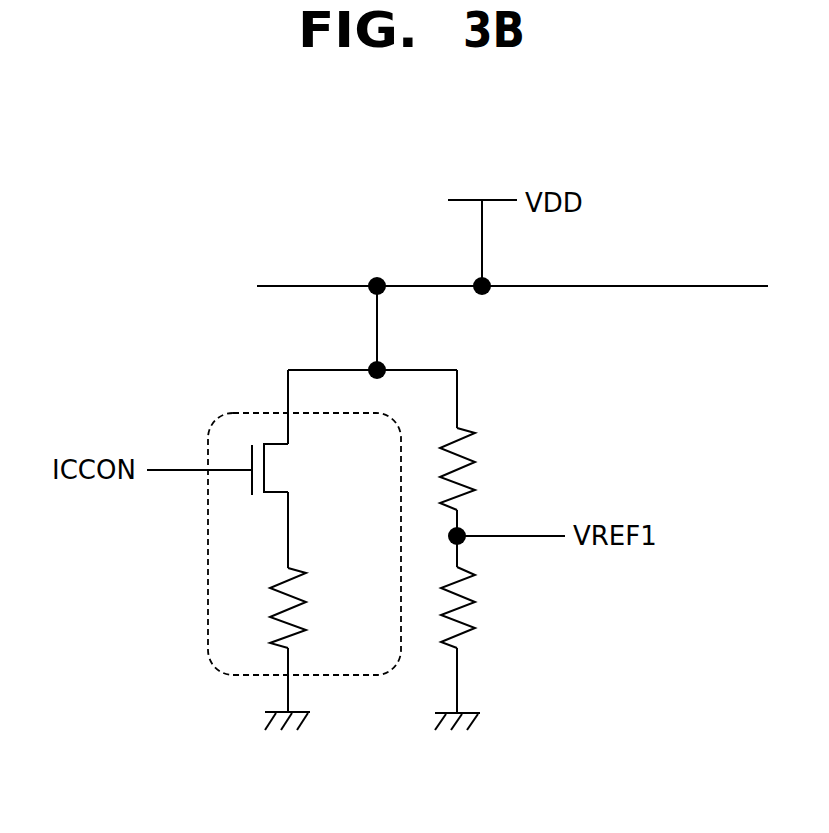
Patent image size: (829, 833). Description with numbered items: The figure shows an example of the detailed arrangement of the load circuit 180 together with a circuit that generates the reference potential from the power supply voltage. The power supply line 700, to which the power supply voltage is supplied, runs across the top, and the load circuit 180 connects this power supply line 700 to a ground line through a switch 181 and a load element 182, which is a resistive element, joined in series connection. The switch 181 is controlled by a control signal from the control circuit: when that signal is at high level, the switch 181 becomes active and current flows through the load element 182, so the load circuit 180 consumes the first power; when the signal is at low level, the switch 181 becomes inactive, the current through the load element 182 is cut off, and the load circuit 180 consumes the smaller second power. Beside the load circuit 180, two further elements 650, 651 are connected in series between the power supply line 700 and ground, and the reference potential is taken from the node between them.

The load circuit 180 is at (205, 597).
The switch 181 is at (287, 472).
The load element 182 is at (317, 608).
The resistor 650 is at (478, 473).
The resistor 651 is at (478, 617).
The power supply line 700 is at (567, 287).